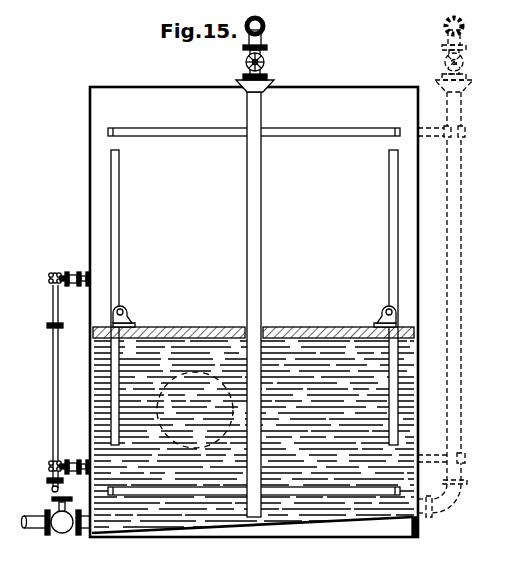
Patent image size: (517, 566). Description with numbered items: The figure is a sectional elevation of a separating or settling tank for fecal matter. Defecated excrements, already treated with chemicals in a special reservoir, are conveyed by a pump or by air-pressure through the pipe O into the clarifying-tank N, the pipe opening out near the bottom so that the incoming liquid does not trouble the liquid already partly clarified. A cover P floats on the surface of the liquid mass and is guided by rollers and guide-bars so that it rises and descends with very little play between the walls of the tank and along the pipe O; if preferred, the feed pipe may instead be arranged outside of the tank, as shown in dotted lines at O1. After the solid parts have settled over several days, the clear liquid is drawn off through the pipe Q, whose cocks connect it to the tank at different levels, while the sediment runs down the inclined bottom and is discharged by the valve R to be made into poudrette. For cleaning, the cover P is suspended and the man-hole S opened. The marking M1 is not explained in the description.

The tank M1 is at (209, 312).
The clarifying-tank N is at (255, 311).
The pipe O is at (260, 267).
The pipe arranged outside of the tank O1 is at (451, 267).
The floating cover P is at (253, 322).
The pipe Q is at (61, 382).
The valve R is at (48, 516).
The man-hole S is at (195, 410).